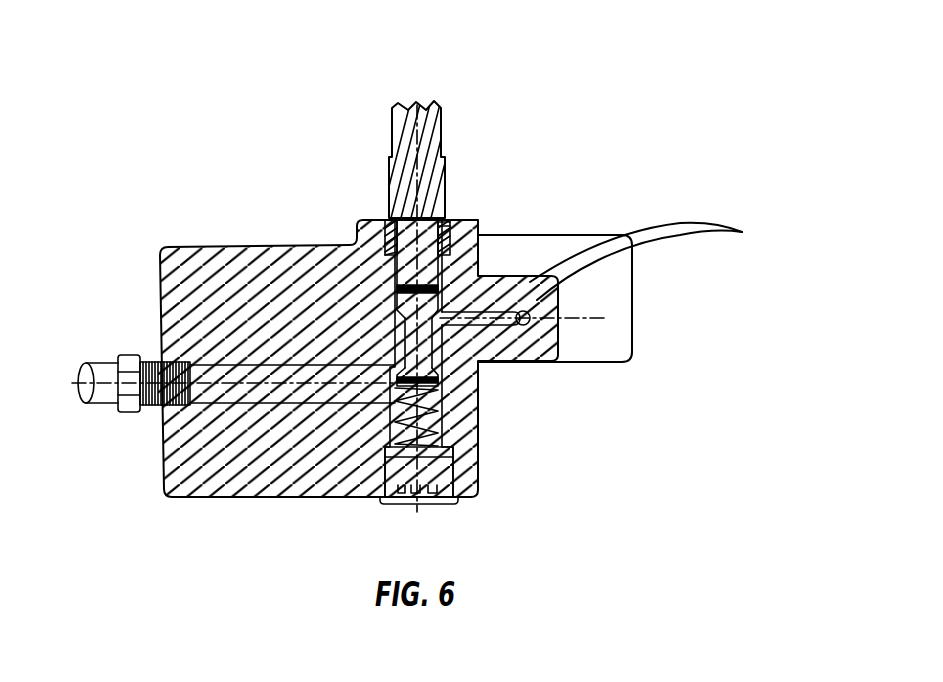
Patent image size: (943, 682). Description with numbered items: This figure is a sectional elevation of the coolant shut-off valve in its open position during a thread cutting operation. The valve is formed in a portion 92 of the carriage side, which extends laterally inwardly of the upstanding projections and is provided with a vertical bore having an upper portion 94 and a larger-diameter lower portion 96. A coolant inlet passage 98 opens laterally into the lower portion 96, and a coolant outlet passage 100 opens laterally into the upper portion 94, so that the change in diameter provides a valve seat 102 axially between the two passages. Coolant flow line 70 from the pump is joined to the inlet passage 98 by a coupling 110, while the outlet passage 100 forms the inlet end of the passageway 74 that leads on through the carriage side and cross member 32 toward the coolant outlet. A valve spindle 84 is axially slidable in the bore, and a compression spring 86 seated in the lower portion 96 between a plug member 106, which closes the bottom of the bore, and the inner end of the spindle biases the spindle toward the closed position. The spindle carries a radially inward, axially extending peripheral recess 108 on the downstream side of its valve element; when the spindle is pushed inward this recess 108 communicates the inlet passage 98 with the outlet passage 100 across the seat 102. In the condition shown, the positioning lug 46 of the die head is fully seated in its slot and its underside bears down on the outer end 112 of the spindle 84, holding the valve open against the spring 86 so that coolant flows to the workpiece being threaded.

The cross member 32 is at (615, 343).
The positioning lug 46 is at (437, 113).
The coolant flow line 70 is at (103, 405).
The passageway 74 is at (653, 271).
The valve spindle 84 is at (372, 220).
The compression spring 86 is at (463, 449).
The portion of carriage side 92 is at (185, 251).
The upper portion of vertical bore 94 is at (442, 310).
The lower portion of vertical bore 96 is at (448, 435).
The coolant inlet passage 98 is at (207, 397).
The coolant outlet passage 100 is at (503, 313).
The valve seat 102 is at (393, 384).
The plug member 106 is at (453, 497).
The peripheral recess 108 is at (423, 347).
The coupling 110 is at (158, 359).
The outer end of spindle 112 is at (446, 217).